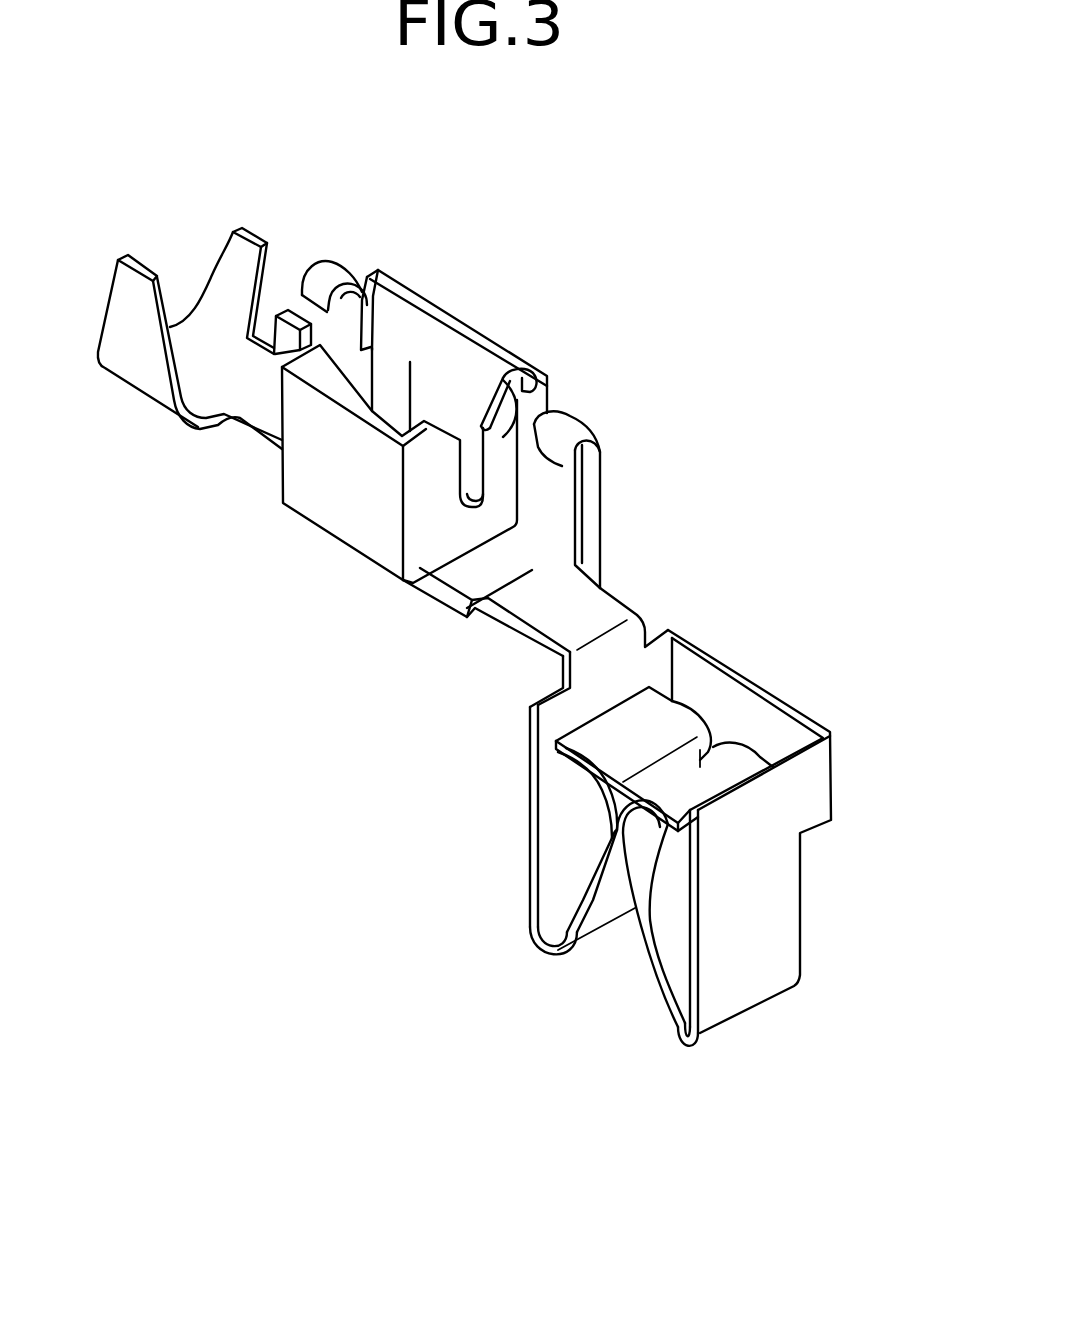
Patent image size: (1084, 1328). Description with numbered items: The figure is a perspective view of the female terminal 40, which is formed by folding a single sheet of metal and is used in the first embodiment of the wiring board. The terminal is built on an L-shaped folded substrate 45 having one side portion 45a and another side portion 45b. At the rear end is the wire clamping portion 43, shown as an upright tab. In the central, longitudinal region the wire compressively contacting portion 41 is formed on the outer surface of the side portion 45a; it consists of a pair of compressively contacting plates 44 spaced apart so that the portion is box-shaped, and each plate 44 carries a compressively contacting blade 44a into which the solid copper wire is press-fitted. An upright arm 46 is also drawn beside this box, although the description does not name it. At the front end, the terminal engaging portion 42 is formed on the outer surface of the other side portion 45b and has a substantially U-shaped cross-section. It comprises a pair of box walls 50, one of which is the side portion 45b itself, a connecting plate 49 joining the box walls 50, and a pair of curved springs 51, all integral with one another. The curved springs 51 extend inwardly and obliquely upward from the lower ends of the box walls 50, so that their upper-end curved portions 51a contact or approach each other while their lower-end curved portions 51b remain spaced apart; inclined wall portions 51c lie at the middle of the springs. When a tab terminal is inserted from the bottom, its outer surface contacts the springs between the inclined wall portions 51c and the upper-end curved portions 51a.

The female terminal 40 is at (485, 217).
The wire compressively contacting portion 41 is at (321, 512).
The terminal engaging portion 42 is at (744, 668).
The wire clamping portion 43 is at (131, 368).
The compressively contacting plates 44 is at (402, 340).
The compressively contacting blade 44a is at (357, 330).
The L-shaped folded substrate 45 is at (501, 617).
The one side portion of substrate 45a is at (543, 622).
The other side portion of substrate 45b is at (543, 763).
The upright arm 46 is at (603, 500).
The connecting plate 49 is at (787, 722).
The box walls 50 is at (547, 847).
The curved springs 51 is at (592, 930).
The upper-end curved portions 51a is at (675, 735).
The lower-end curved portions 51b is at (528, 950).
The inclined wall portions 51c is at (610, 900).